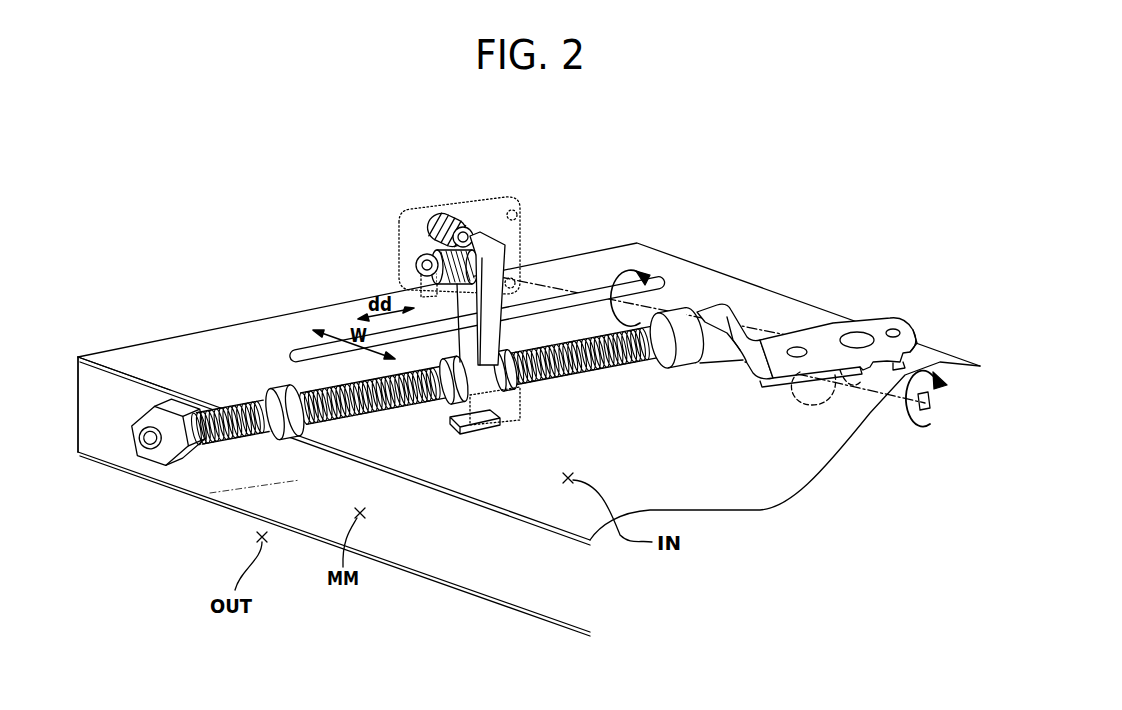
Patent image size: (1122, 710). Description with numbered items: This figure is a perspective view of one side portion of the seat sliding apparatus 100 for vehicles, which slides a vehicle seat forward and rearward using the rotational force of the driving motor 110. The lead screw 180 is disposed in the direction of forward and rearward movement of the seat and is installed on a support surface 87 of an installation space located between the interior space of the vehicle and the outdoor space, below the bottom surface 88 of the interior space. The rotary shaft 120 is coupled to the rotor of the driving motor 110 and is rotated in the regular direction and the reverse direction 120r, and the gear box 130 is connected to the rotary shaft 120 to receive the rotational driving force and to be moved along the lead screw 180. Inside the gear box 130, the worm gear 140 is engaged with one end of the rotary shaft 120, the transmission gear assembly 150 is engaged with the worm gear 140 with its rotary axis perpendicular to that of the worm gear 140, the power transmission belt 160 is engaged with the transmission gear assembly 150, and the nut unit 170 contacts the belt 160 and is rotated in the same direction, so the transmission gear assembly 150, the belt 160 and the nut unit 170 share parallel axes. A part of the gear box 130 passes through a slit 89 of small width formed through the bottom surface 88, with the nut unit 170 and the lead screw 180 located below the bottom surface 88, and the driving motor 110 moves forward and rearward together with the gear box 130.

The seat sliding apparatus 100 is at (448, 229).
The driving motor 110 is at (788, 388).
The rotary shaft 120 is at (867, 390).
The regular direction and reverse direction 120r is at (949, 399).
The gear box 130 is at (498, 197).
The worm gear 140 is at (430, 212).
The transmission gear assembly 150 is at (440, 252).
The power transmission belt 160 is at (477, 313).
The nut unit 170 is at (460, 430).
The lead screw 180 is at (639, 368).
The support surface 87 is at (124, 459).
The bottom surface 88 is at (172, 357).
The guide slot 89 is at (296, 356).